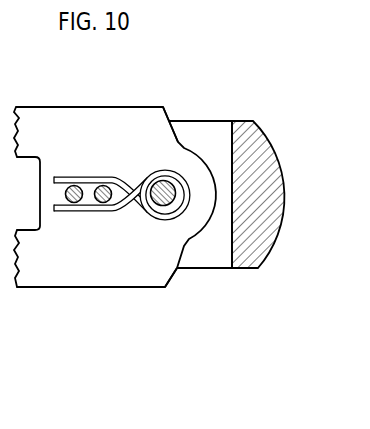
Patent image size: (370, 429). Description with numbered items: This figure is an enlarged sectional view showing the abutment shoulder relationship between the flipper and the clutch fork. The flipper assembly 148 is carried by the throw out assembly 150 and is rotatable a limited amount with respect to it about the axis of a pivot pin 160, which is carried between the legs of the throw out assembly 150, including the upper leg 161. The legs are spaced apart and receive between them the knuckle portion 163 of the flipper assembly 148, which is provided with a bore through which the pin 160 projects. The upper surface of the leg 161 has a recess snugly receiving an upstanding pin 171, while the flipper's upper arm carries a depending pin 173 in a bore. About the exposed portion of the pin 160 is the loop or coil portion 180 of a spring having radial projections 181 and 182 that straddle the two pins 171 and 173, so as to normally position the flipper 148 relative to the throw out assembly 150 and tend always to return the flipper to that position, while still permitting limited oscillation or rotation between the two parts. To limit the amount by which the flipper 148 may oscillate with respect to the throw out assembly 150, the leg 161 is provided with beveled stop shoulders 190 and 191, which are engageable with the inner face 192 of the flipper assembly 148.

The throw out assembly 150 is at (97, 105).
The upper leg 161 is at (131, 113).
The knuckle portion 163 is at (210, 257).
The beveled stop shoulder 190 is at (168, 123).
The beveled stop shoulder 191 is at (179, 260).
The inner face 192 is at (231, 137).
The flipper assembly 148 is at (256, 120).
The loop or coil portion 180 is at (184, 187).
The pivot pin 160 is at (163, 181).
The upstanding pin 171 is at (72, 186).
The radial projection 182 is at (92, 178).
The depending pin 173 is at (103, 186).
The radial projection 181 is at (80, 213).